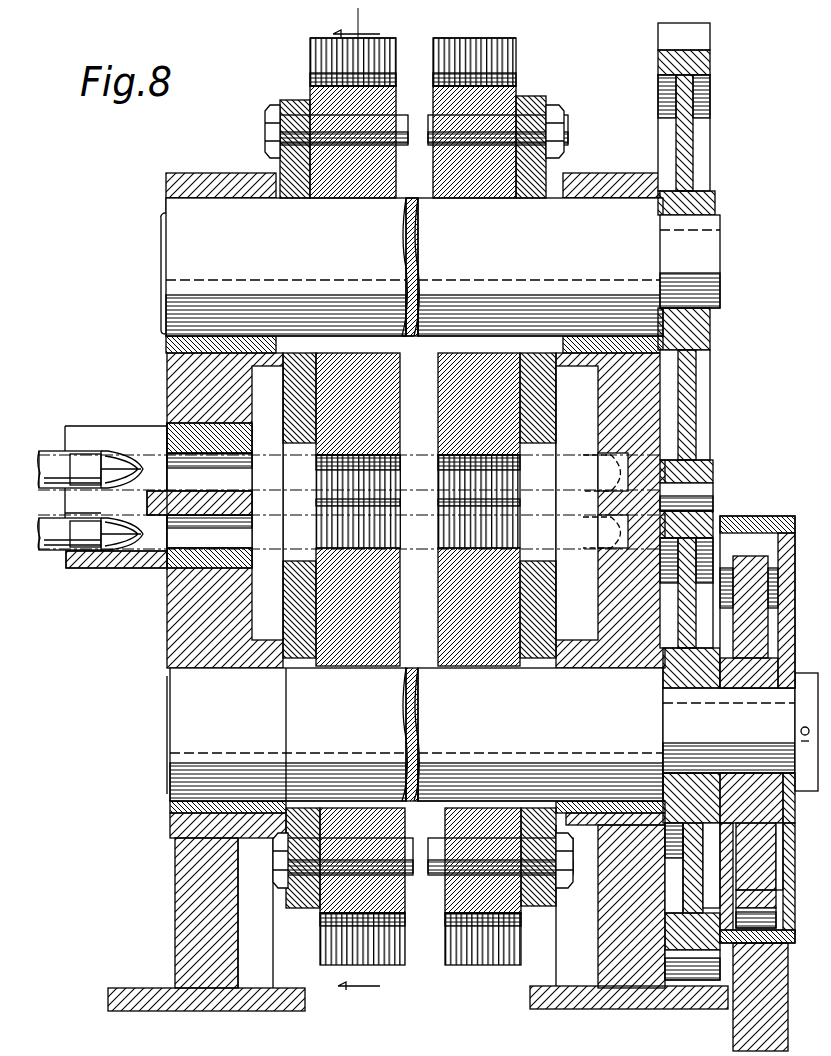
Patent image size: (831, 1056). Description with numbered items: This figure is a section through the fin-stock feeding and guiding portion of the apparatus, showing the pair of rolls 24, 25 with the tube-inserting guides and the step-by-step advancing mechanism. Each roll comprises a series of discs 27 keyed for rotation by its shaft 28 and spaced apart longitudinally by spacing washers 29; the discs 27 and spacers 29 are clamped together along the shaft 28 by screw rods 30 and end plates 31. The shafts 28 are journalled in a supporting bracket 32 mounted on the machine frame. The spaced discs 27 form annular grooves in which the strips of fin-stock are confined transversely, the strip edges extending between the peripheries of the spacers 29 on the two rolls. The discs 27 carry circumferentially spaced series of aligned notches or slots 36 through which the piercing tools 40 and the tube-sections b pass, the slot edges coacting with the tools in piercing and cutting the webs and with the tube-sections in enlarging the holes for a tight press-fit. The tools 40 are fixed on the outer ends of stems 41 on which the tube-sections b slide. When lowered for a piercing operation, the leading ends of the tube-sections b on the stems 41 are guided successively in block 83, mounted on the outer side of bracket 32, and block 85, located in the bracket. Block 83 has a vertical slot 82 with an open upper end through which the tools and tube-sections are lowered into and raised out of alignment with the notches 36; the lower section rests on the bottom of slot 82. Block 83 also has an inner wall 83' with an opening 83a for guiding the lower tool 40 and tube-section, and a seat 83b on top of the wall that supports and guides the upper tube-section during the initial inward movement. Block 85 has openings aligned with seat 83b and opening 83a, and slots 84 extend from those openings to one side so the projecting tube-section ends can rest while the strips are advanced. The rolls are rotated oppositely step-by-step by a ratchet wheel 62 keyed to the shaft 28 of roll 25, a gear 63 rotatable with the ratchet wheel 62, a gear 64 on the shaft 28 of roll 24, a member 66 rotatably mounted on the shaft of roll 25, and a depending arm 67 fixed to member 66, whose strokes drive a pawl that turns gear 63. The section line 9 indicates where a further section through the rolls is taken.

The section line 9— 9 is at (356, 508).
The roll 24 is at (521, 65).
The roll 25 is at (486, 967).
The discs 27 is at (303, 38).
The shaft 28 is at (492, 734).
The spacing washers 29 is at (402, 105).
The screw rods 30 is at (230, 129).
The end plates 31 is at (540, 96).
The supporting bracket 32 is at (159, 345).
The notches or slots 36 is at (505, 37).
The piercing tool 40 is at (121, 439).
The stems or mandrels 41 is at (36, 443).
The ratchet wheel 62 is at (742, 555).
The gear 63 is at (700, 520).
The gear 64 is at (703, 328).
The member 66 is at (780, 928).
The depending arm 67 is at (770, 992).
The vertical slot 82 is at (70, 417).
The block 83 is at (159, 575).
The wall 83' is at (89, 502).
The opening 83a is at (155, 507).
The seat 83b is at (172, 430).
The slots 84 is at (397, 500).
The block 85 is at (170, 425).
The tube-section b is at (78, 446).